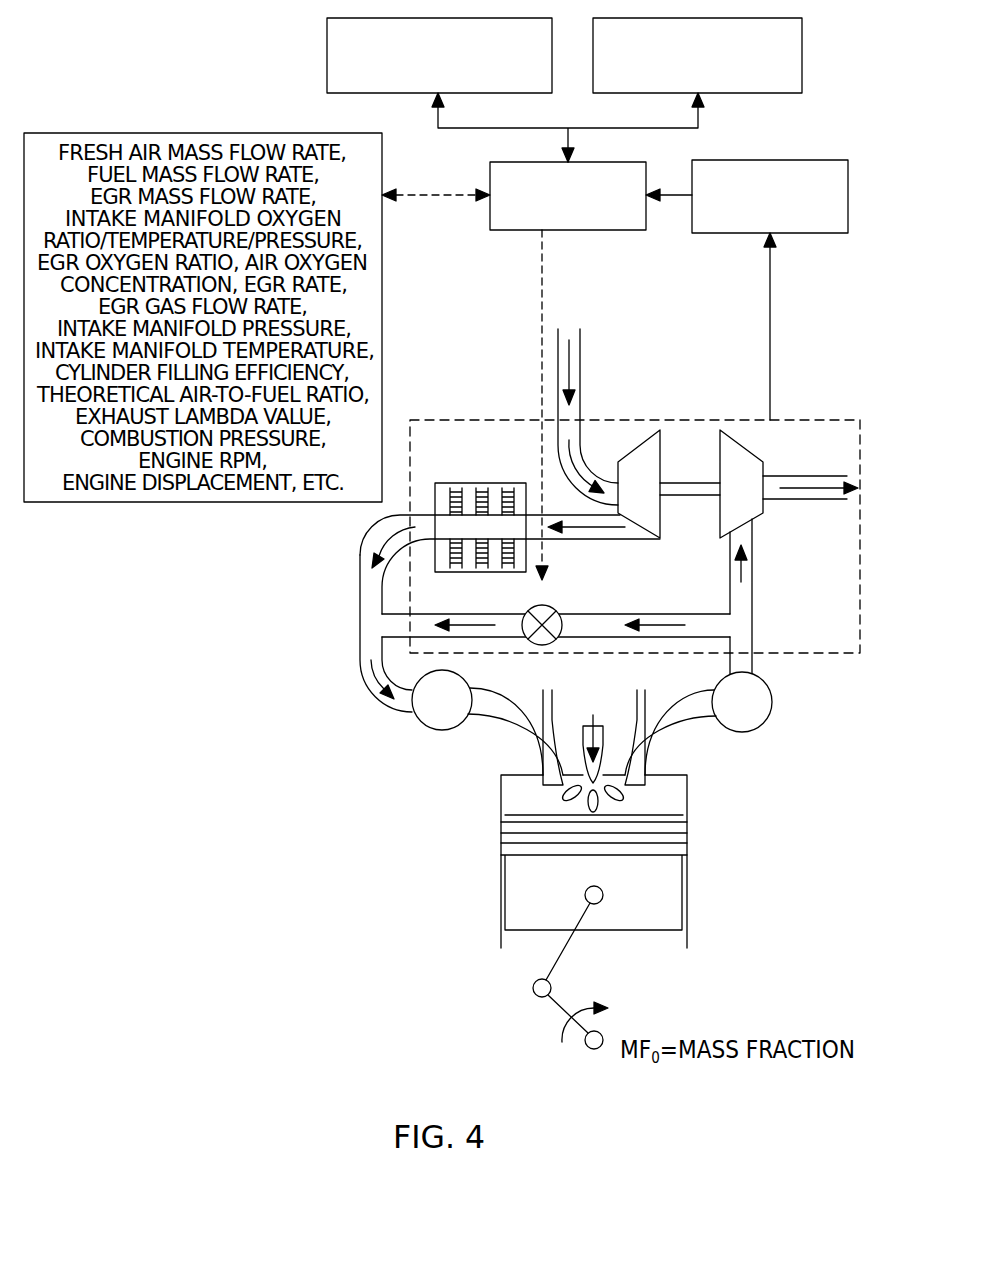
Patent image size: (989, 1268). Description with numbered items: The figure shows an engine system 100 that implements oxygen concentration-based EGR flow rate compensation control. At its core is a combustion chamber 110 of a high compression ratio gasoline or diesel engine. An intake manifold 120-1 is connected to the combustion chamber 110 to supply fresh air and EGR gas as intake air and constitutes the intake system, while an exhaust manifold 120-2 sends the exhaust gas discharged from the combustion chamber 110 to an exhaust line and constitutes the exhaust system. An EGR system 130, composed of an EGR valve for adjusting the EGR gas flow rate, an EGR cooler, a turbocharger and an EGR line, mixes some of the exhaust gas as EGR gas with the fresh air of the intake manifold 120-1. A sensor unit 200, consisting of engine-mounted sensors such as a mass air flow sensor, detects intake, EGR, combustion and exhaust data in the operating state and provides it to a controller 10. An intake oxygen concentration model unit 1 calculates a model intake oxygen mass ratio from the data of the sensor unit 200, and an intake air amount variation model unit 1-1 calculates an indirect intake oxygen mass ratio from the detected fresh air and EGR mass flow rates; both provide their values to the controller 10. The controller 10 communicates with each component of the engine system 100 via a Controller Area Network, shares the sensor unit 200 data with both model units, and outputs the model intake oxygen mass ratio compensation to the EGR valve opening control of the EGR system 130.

The intake air amount variation model unit 1-1 is at (327, 60).
The intake oxygen concentration model unit 1 is at (780, 93).
The controller 10 is at (612, 230).
The sensor unit 200 is at (820, 233).
The engine system 100 is at (698, 384).
The EGR system 130 is at (800, 420).
The intake manifold 120-1 is at (360, 632).
The exhaust manifold 120-2 is at (772, 710).
The combustion chamber 110 is at (687, 897).